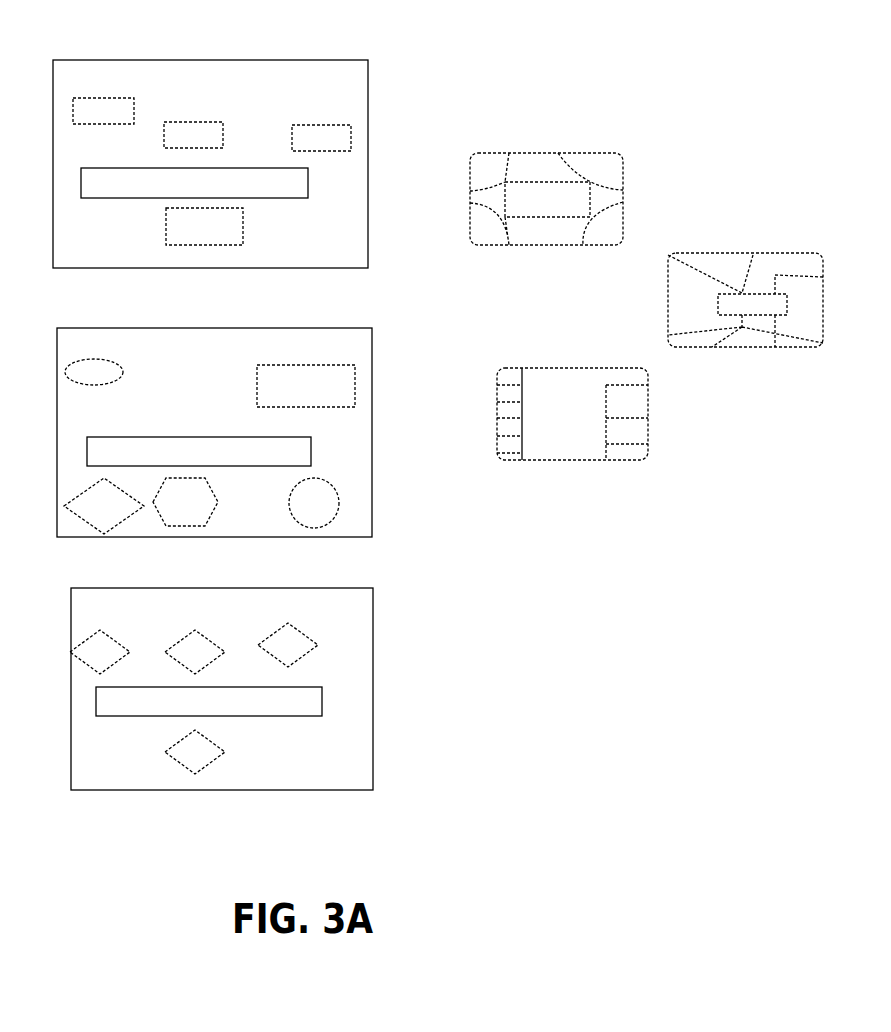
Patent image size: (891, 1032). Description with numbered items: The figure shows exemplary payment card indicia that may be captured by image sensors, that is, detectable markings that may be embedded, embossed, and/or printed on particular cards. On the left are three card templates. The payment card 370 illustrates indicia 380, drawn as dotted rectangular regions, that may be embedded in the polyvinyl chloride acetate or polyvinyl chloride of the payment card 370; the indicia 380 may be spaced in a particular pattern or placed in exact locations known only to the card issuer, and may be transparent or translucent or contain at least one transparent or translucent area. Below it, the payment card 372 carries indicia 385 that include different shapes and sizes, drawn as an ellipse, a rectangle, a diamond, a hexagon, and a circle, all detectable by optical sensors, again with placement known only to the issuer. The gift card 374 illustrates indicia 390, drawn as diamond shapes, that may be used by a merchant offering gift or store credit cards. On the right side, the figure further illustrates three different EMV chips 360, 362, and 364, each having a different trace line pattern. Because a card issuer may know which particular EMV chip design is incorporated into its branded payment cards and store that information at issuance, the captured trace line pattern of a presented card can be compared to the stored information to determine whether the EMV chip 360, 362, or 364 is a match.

The payment card 370 is at (210, 143).
The payment card 372 is at (214, 417).
The gift card 374 is at (221, 672).
The indicia 380 is at (212, 171).
The indicia 385 is at (209, 446).
The indicia 390 is at (194, 698).
The EMV chip 360 is at (592, 151).
The EMV chip 362 is at (759, 252).
The EMV chip 364 is at (575, 366).